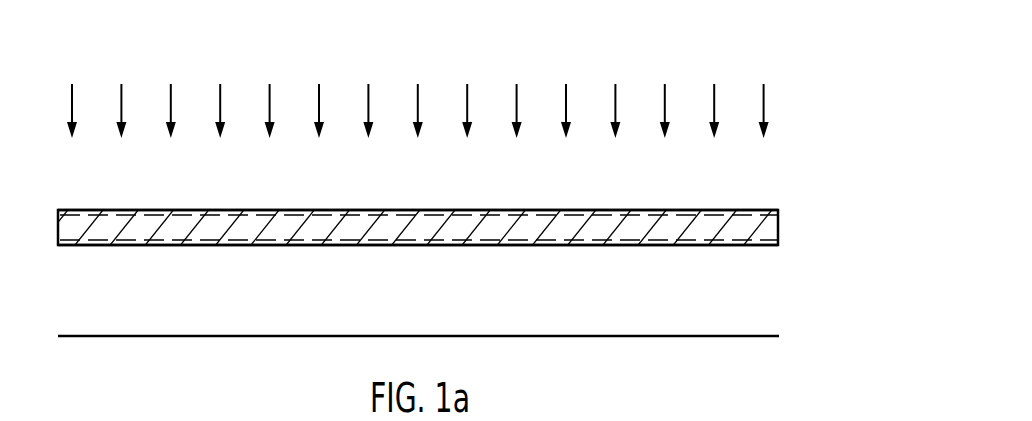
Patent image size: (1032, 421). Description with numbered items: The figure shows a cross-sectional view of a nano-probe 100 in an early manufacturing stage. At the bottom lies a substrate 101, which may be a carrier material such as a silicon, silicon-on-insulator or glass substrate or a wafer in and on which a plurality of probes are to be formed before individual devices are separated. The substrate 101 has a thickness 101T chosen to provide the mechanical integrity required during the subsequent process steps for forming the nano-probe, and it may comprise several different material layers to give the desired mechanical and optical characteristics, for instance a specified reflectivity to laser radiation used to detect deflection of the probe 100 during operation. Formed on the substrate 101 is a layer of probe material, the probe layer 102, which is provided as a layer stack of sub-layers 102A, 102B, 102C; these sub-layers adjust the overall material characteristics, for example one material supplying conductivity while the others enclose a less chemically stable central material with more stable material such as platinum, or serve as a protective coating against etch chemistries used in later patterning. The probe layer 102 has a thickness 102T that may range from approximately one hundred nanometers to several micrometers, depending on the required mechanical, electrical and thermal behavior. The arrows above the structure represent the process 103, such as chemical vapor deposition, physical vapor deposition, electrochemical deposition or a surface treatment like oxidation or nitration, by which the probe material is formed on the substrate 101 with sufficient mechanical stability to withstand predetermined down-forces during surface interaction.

The nano-probe 100 is at (797, 63).
The substrate 101 is at (765, 313).
The thickness of the substrate 101T is at (110, 254).
The probe layer 102 is at (476, 226).
The sub-layer 102A is at (772, 207).
The sub-layer 102B is at (768, 228).
The sub-layer 102C is at (763, 242).
The thickness of the layer 102T is at (418, 275).
The process 103 is at (767, 107).